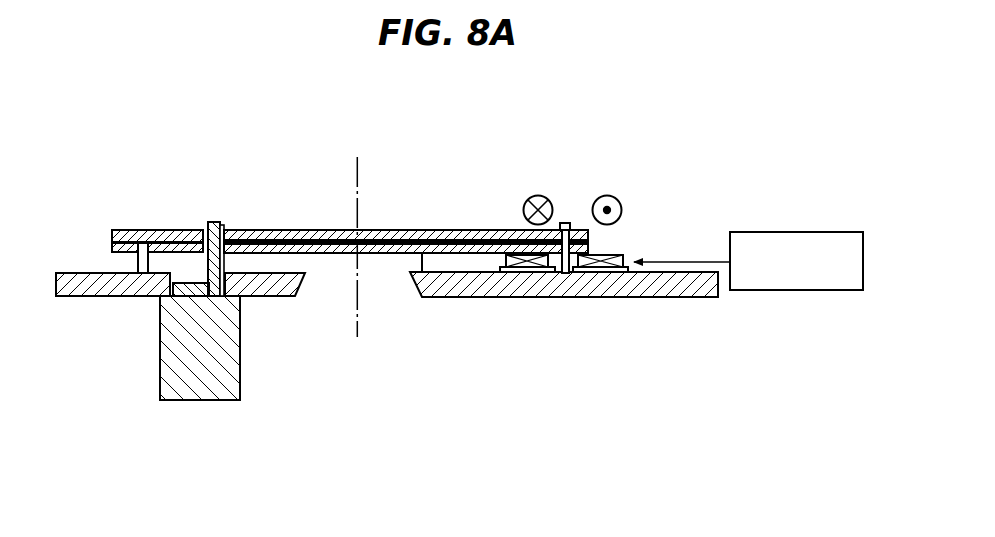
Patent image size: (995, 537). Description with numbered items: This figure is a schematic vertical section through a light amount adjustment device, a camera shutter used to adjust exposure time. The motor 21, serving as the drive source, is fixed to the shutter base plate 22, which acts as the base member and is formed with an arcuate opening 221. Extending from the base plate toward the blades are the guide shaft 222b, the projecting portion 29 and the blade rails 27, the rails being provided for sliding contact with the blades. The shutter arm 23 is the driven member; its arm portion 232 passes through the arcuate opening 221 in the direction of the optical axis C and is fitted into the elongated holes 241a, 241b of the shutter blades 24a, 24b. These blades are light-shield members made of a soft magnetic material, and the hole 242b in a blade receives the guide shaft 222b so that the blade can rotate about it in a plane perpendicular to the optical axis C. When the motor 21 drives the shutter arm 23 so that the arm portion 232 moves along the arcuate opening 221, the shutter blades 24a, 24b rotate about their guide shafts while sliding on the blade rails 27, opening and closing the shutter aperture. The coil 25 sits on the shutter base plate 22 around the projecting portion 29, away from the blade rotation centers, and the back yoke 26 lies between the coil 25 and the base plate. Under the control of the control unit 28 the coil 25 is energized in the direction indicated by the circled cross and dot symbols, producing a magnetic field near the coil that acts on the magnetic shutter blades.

The motor 21 is at (165, 342).
The shutter base plate 22 is at (522, 285).
The arcuate opening 221 is at (213, 297).
The guide shaft 222b is at (137, 236).
The shutter arm 23 is at (206, 217).
The arm portion 232 is at (223, 224).
The shutter blade 24a is at (457, 230).
The shutter blade 24b is at (330, 253).
The elongated hole 241a is at (230, 253).
The elongated hole 241b is at (255, 230).
The hole 242b is at (139, 263).
The coil 25 is at (620, 255).
The back yoke 26 is at (620, 273).
The blade rail 27 is at (437, 265).
The control unit 28 is at (797, 290).
The projecting portion 29 is at (566, 222).
The optical axis C is at (358, 175).